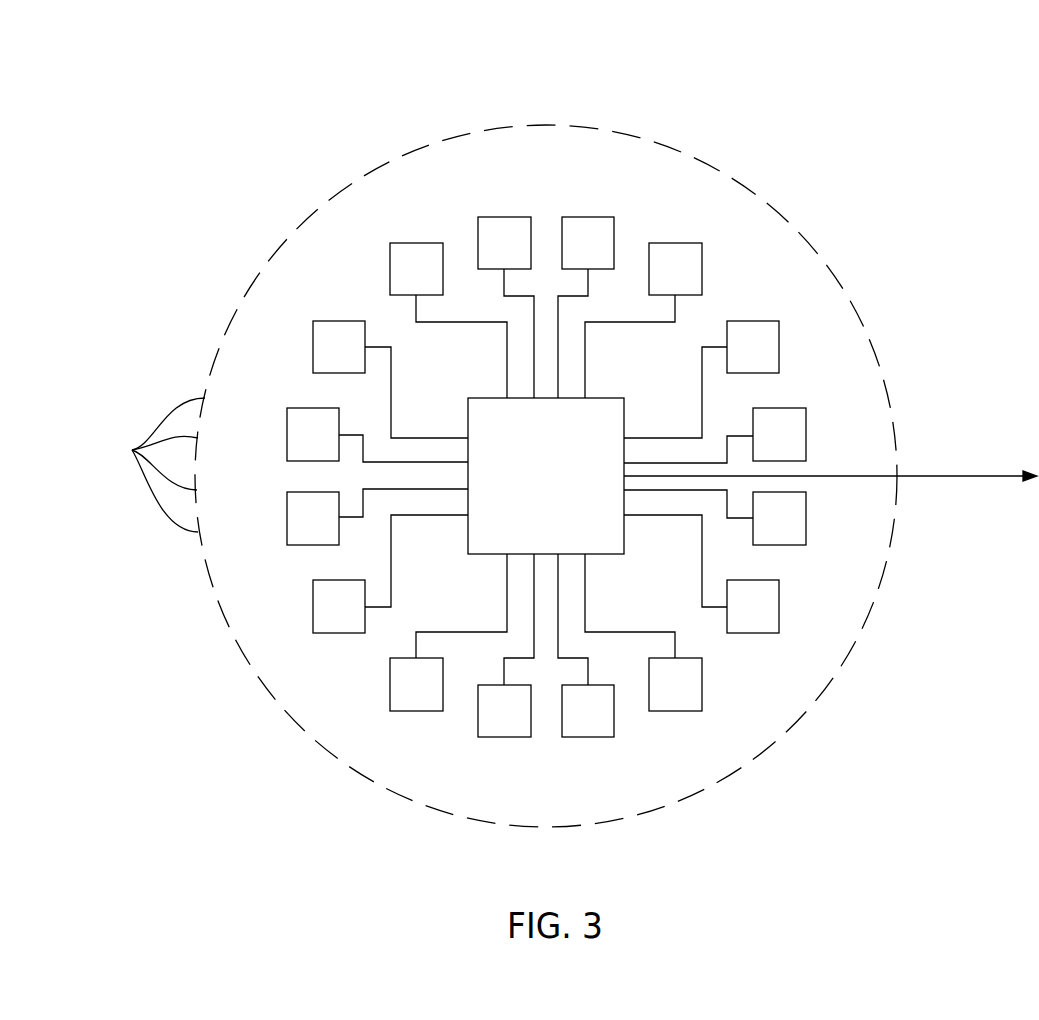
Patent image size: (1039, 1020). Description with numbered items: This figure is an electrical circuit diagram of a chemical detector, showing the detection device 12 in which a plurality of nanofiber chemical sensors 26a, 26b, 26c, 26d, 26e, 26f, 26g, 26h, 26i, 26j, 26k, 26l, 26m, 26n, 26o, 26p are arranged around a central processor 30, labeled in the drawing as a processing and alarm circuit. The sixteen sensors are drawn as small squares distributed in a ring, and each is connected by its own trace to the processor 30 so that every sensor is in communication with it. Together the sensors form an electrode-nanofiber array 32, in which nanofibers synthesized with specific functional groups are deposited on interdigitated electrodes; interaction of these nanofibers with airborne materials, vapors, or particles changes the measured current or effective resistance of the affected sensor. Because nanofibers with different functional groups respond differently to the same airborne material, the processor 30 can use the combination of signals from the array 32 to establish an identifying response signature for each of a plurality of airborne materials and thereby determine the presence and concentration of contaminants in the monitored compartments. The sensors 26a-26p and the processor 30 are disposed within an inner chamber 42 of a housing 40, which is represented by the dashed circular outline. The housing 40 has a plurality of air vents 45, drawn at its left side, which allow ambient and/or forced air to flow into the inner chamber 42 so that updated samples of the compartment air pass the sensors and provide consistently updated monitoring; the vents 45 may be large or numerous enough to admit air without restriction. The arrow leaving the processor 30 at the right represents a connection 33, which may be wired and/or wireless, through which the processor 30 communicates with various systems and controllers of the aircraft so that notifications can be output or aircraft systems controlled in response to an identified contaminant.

The detection device 12 is at (250, 125).
The electrode-nanofiber array 32 is at (163, 70).
The nanofiber chemical sensor 26a is at (588, 232).
The nanofiber chemical sensor 26b is at (682, 258).
The nanofiber chemical sensor 26c is at (763, 337).
The nanofiber chemical sensor 26d is at (788, 430).
The nanofiber chemical sensor 26e is at (795, 538).
The nanofiber chemical sensor 26f is at (757, 612).
The nanofiber chemical sensor 26g is at (688, 690).
The nanofiber chemical sensor 26h is at (593, 722).
The nanofiber chemical sensor 26i is at (507, 722).
The nanofiber chemical sensor 26j is at (411, 700).
The nanofiber chemical sensor 26k is at (329, 623).
The nanofiber chemical sensor 26l is at (302, 528).
The nanofiber chemical sensor 26m is at (303, 447).
The nanofiber chemical sensor 26n is at (322, 347).
The nanofiber chemical sensor 26o is at (407, 260).
The nanofiber chemical sensor 26p is at (488, 228).
The processor 30 is at (487, 398).
The connection 33 is at (1008, 475).
The housing 40 is at (813, 248).
The inner chamber 42 is at (660, 379).
The air vents 45 is at (153, 465).